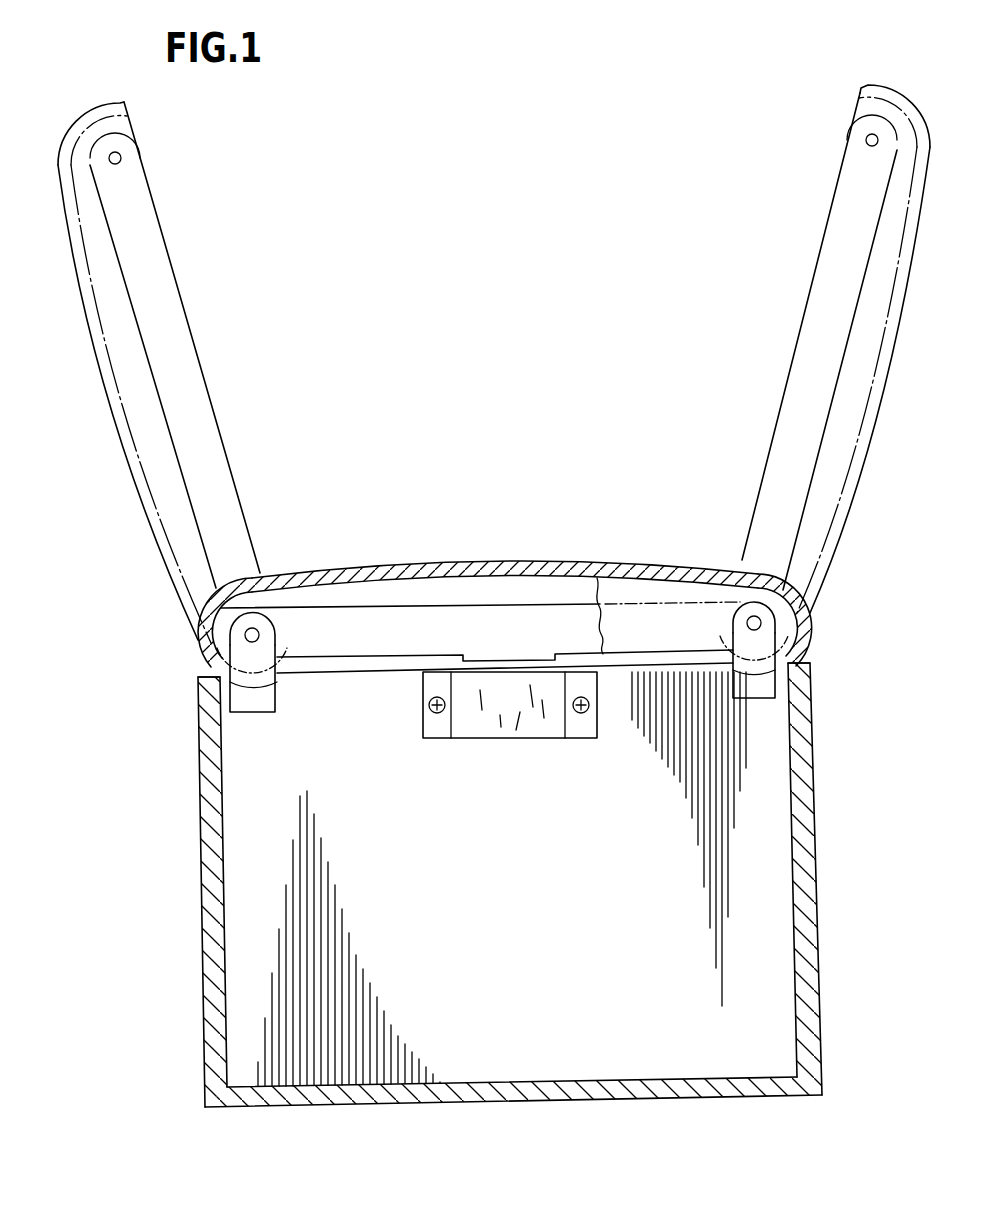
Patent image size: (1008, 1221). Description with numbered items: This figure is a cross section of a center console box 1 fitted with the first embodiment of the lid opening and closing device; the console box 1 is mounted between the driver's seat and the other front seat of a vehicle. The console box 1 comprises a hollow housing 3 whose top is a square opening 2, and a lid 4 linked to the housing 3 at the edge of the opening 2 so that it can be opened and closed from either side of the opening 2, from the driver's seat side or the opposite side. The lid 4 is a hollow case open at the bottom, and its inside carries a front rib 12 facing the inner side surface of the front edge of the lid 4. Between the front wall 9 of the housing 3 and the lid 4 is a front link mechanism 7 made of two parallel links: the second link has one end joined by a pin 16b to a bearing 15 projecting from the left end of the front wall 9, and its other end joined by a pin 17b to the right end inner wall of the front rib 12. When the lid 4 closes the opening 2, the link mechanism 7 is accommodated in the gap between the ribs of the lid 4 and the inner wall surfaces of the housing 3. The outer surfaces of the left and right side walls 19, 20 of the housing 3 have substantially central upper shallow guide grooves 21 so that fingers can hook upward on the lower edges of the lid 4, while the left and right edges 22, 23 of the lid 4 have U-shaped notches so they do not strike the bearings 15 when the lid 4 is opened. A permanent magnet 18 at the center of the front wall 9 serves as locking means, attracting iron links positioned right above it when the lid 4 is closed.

The center console box 1 is at (485, 910).
The opening 2 is at (498, 575).
The housing 3 is at (205, 1055).
The lid 4 is at (494, 376).
The front link mechanism 7 is at (557, 604).
The front wall 9 is at (340, 1060).
The front rib 12 is at (630, 580).
The bearing 15 is at (243, 703).
The pin 16b is at (255, 632).
The pin 17b is at (748, 622).
The permanent magnet 18 is at (512, 725).
The left side wall 19 is at (210, 855).
The right side wall 20 is at (810, 876).
The guide groove 21 is at (198, 677).
The left edge 22 is at (198, 637).
The right edge 23 is at (810, 617).